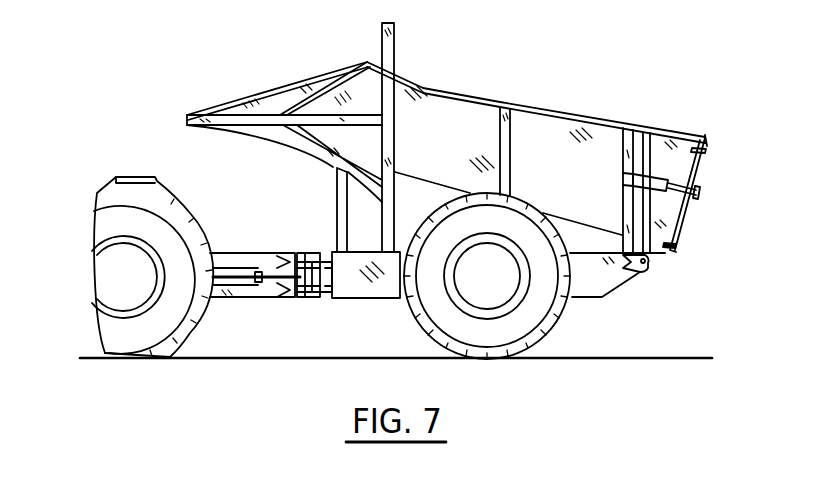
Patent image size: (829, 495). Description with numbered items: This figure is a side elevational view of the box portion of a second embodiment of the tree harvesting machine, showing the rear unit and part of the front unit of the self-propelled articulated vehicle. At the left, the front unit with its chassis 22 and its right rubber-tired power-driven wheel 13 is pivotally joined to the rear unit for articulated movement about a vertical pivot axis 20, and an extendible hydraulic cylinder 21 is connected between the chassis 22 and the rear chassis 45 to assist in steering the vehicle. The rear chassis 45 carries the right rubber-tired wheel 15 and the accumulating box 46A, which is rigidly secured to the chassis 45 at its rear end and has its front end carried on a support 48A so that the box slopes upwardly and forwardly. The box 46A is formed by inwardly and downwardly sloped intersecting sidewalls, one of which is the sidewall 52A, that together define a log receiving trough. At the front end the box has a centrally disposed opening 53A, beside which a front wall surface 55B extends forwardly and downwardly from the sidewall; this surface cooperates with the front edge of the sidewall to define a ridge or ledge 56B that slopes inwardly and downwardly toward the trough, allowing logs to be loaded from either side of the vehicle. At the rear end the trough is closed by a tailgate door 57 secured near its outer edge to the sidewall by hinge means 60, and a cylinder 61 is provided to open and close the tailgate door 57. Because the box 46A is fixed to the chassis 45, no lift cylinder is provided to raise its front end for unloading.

The right rubber-tired power-driven wheel 13 is at (193, 332).
The right rubber-tired wheel 15 is at (555, 323).
The vertical pivot axis 20 is at (310, 250).
The extendible hydraulic cylinder 21 is at (260, 270).
The chassis 22 is at (255, 297).
The chassis 45 is at (377, 298).
The accumulating box 46A is at (572, 108).
The support 48A is at (382, 202).
The sidewall 52A is at (460, 108).
The centrally disposed opening 53A is at (233, 98).
The front wall surface 55B is at (273, 100).
The ridge or ledge 56B is at (330, 72).
The tailgate door 57 is at (687, 217).
The pivot or hinge means 60 is at (674, 246).
The cylinder 61 is at (668, 178).